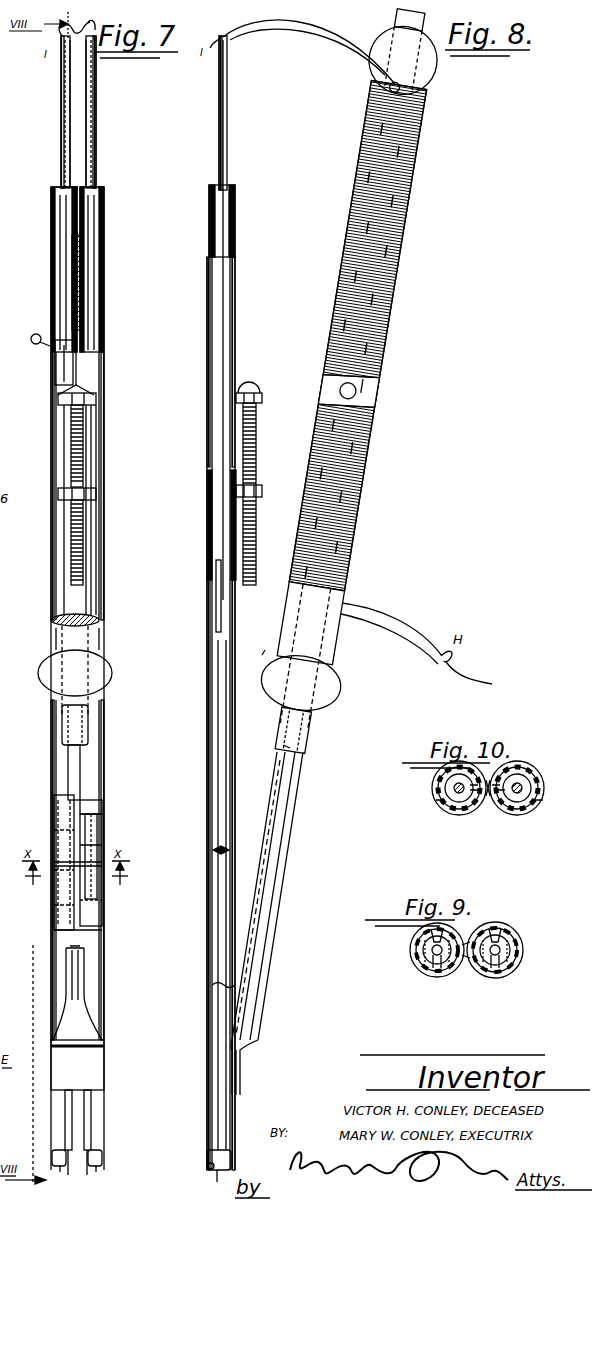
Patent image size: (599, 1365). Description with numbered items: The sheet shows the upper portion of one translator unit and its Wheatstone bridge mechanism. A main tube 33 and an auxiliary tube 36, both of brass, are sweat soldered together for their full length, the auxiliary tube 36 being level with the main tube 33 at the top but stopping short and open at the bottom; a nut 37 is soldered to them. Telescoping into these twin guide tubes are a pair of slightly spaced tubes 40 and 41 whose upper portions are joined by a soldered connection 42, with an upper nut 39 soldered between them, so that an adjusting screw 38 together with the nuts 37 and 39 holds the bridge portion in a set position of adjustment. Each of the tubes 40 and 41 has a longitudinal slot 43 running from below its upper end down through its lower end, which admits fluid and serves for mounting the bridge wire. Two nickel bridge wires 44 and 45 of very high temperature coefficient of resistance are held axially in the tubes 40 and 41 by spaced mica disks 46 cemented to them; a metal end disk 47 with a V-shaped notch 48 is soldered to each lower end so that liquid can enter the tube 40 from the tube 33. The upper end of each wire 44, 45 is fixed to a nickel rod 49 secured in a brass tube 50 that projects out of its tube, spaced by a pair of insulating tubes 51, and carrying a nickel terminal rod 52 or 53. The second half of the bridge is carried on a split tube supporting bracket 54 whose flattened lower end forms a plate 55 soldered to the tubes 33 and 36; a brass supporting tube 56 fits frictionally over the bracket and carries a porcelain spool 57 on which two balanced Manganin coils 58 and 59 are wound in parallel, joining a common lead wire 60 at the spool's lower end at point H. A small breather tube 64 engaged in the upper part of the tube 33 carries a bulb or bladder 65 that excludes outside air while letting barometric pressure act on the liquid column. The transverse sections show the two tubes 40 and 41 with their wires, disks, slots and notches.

In FIG. 7, the main tube 33 is at (53, 598).
In FIG. 8, the main tube 33 is at (210, 1029).
In FIG. 10, the main tube 33 is at (438, 800).
In FIG. 9, the main tube 33 is at (412, 955).
In FIG. 7, the auxiliary tube 36 is at (92, 570).
In FIG. 10, the auxiliary tube 36 is at (545, 798).
In FIG. 9, the auxiliary tube 36 is at (520, 965).
In FIG. 7, the nut 37 is at (88, 493).
In FIG. 8, the nut 37 is at (262, 490).
In FIG. 7, the adjusting screw 38 is at (84, 440).
In FIG. 8, the adjusting screw 38 is at (257, 445).
In FIG. 7, the upper nut 39 is at (88, 400).
In FIG. 8, the upper nut 39 is at (259, 393).
In FIG. 7, the tube 40 is at (52, 208).
In FIG. 8, the tube 40 is at (212, 331).
In FIG. 10, the tube 40 is at (452, 812).
In FIG. 9, the tube 40 is at (445, 976).
In FIG. 7, the tube 41 is at (100, 226).
In FIG. 10, the tube 41 is at (505, 815).
In FIG. 9, the tube 41 is at (505, 978).
In FIG. 7, the soldered connection 42 is at (82, 310).
In FIG. 7, the longitudinal slot 43 is at (100, 810).
In FIG. 10, the longitudinal slot 43 is at (512, 766).
In FIG. 9, the longitudinal slot 43 is at (432, 932).
In FIG. 7, the wire 44 is at (55, 832).
In FIG. 8, the wire 44 is at (213, 738).
In FIG. 10, the wire 44 is at (438, 790).
In FIG. 9, the wire 44 is at (420, 965).
In FIG. 7, the wire 45 is at (96, 842).
In FIG. 10, the wire 45 is at (520, 782).
In FIG. 9, the wire 45 is at (500, 950).
In FIG. 7, the mica disks 46 is at (95, 880).
In FIG. 8, the mica disks 46 is at (213, 853).
In FIG. 10, the mica disks 46 is at (445, 773).
In FIG. 9, the metal end disk 47 is at (433, 976).
In FIG. 9, the V-shaped notch 48 is at (418, 946).
In FIG. 8, the nickel rod 49 is at (221, 612).
In FIG. 7, the brass tube 50 is at (70, 166).
In FIG. 8, the brass tube 50 is at (224, 116).
In FIG. 7, the insulating tubes 51 is at (82, 188).
In FIG. 8, the insulating tubes 51 is at (236, 190).
In FIG. 7, the nickel terminal rod 52 is at (63, 102).
In FIG. 8, the nickel terminal rod 52 is at (227, 53).
In FIG. 7, the nickel terminal rod 53 is at (94, 112).
In FIG. 7, the split tube supporting bracket 54 is at (80, 755).
In FIG. 8, the split tube supporting bracket 54 is at (270, 894).
In FIG. 7, the plate 55 is at (85, 1063).
In FIG. 8, the plate 55 is at (238, 1066).
In FIG. 7, the brass supporting tube 56 is at (88, 722).
In FIG. 7, the porcelain spool 57 is at (110, 668).
In FIG. 7, the balanced coil 58 is at (74, 40).
In FIG. 8, the balanced coil 58 is at (326, 26).
In FIG. 7, the balanced coil 59 is at (95, 46).
In FIG. 8, the balanced coil 59 is at (300, 34).
In FIG. 8, the common lead wire 60 is at (476, 678).
In FIG. 7, the breather tube 64 is at (50, 348).
In FIG. 7, the bulb or bladder 65 is at (36, 334).